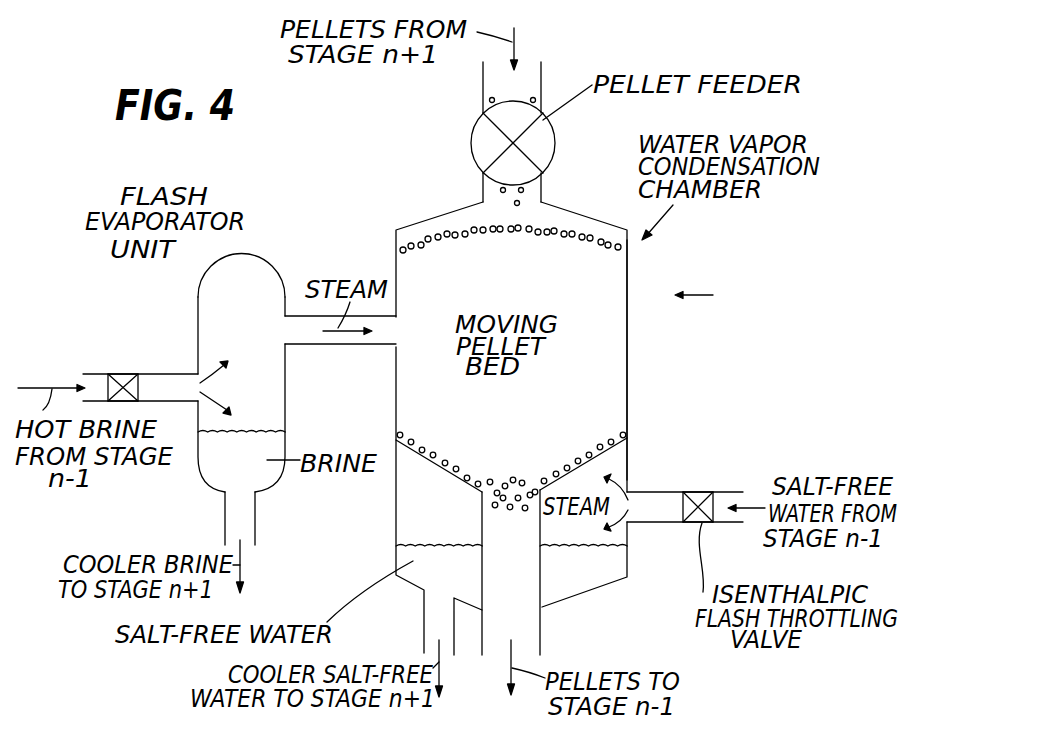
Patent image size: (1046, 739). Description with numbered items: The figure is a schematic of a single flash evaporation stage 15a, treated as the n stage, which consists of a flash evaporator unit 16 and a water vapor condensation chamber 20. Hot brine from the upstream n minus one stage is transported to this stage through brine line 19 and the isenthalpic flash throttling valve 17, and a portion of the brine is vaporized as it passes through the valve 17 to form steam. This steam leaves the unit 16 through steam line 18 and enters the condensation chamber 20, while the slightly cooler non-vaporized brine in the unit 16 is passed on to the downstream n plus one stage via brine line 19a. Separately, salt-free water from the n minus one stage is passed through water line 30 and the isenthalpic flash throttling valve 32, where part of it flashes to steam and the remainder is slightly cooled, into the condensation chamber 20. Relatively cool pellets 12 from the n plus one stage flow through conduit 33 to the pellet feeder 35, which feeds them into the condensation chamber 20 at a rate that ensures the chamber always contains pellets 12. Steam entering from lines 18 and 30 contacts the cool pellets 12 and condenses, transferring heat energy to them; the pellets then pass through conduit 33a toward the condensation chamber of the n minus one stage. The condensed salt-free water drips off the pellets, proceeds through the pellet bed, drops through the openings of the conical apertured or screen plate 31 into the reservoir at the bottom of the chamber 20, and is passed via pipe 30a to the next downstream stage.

The pellets 12 is at (462, 232).
The flash evaporation stage 15a is at (577, 427).
The flash evaporator unit 16 is at (282, 273).
The isenthalpic flash throttling valve 17 is at (122, 373).
The steam line 18 is at (333, 348).
The brine line 19 is at (97, 373).
The brine line 19a is at (255, 537).
The water vapor condensation chamber 20 is at (627, 342).
The water line 30 is at (730, 490).
The pipe 30a is at (424, 615).
The conical apertured or screen plate 31 is at (612, 452).
The isenthalpic flash throttling valve 32 is at (692, 490).
The conduit 33 is at (482, 85).
The conduit 33a is at (482, 633).
The pellet feeder 35 is at (472, 140).